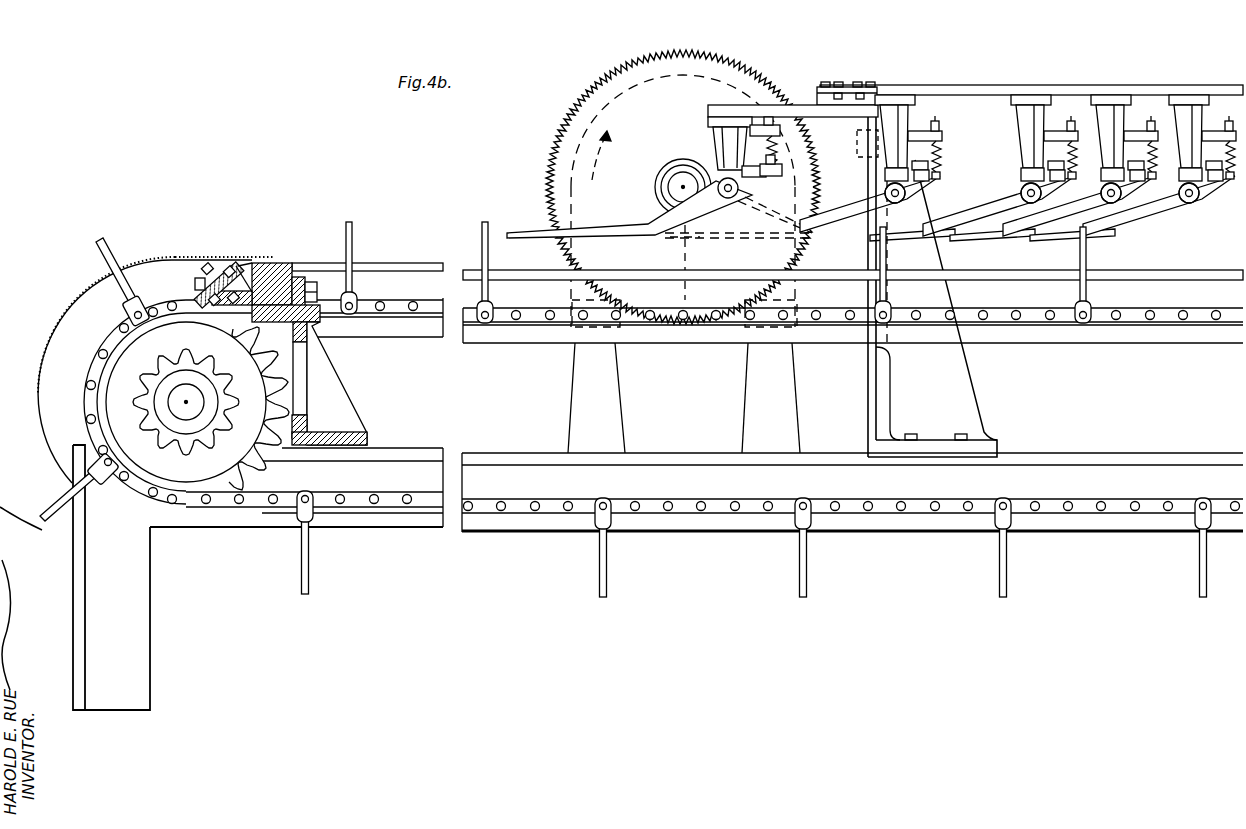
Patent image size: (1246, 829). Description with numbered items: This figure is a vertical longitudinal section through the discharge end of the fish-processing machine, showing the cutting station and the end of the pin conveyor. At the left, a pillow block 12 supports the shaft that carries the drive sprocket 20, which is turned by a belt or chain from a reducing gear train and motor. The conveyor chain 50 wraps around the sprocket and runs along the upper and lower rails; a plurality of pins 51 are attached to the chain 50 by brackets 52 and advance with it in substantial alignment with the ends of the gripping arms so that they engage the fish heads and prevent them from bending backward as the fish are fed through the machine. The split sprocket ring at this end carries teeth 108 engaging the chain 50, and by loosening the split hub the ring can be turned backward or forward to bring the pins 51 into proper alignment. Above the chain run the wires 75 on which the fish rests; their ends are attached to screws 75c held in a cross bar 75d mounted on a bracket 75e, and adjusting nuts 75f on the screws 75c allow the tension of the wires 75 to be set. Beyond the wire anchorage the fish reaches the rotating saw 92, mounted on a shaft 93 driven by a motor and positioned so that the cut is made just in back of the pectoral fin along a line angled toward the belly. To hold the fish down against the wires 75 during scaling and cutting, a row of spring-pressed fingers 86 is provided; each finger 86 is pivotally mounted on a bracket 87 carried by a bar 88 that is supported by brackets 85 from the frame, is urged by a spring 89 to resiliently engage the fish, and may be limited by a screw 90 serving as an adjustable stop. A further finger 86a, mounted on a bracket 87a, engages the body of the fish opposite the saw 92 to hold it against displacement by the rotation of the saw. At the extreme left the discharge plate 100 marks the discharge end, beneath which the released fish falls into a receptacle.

The pillow block 12 is at (197, 397).
The drive sprocket 20 is at (186, 446).
The chain 50 is at (403, 318).
The pins 51 is at (353, 228).
The brackets 52 is at (358, 298).
The wires 75 is at (462, 268).
The screws 75c is at (254, 268).
The cross bar 75d is at (210, 274).
The bracket 75e is at (308, 422).
The adjusting nuts 75f is at (201, 291).
The brackets 85 is at (931, 212).
The spring-pressed fingers 86 is at (846, 224).
The finger 86a is at (641, 226).
The bracket 87 is at (1030, 105).
The bracket 87a is at (781, 106).
The bar 88 is at (1086, 86).
The spring 89 is at (1074, 152).
The screw 90 is at (747, 180).
The rotating saw 92 is at (548, 170).
The shaft 93 is at (683, 184).
The discharge plate 100 is at (72, 317).
The teeth 108 is at (263, 473).